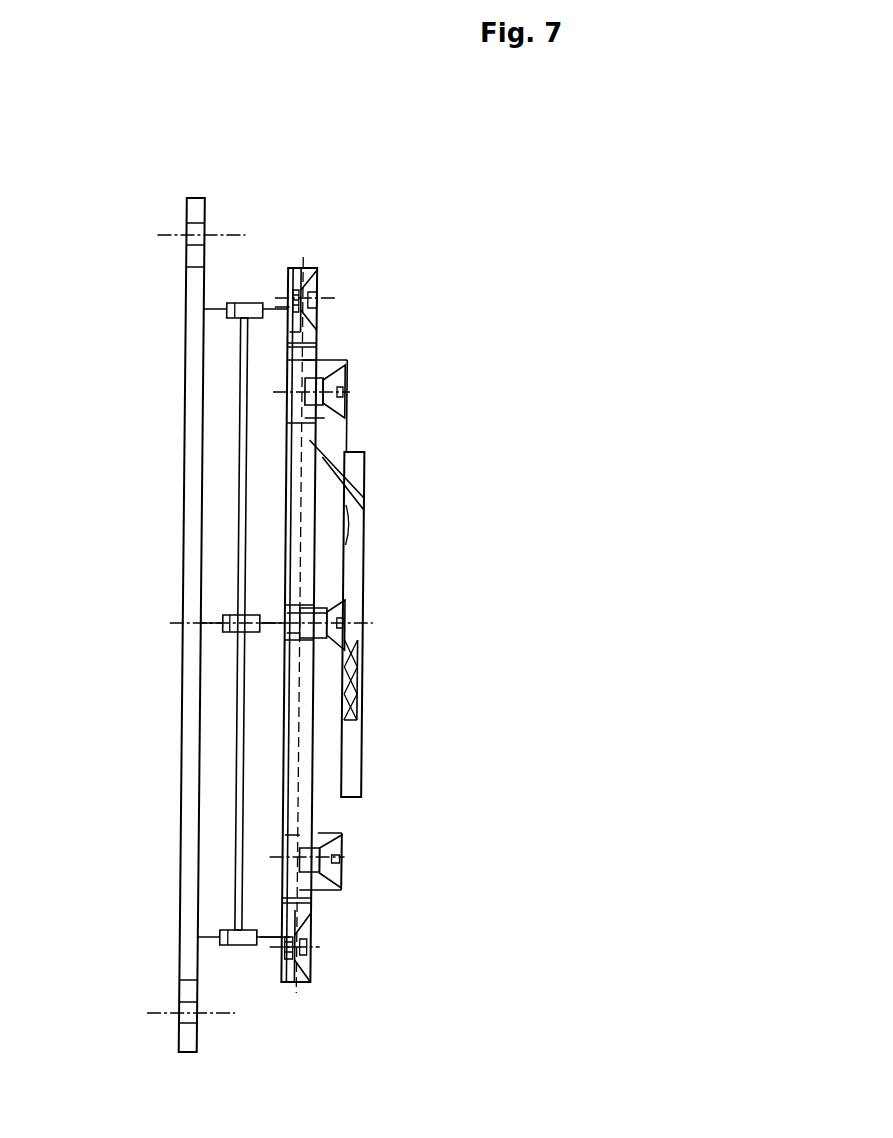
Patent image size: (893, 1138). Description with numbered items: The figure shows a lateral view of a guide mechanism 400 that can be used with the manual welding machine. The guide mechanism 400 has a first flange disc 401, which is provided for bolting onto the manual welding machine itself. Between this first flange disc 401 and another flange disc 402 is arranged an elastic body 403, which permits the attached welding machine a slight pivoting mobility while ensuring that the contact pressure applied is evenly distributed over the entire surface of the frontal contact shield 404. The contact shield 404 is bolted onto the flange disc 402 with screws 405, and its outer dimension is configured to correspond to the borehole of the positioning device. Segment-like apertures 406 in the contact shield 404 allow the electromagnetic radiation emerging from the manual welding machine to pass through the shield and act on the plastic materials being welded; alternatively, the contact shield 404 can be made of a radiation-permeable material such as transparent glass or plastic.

The guide mechanism 400 is at (438, 138).
The first flange disc 401 is at (192, 453).
The flange disc 402 is at (303, 917).
The elastic body 403 is at (243, 710).
The contact shield 404 is at (304, 812).
The screws 405 is at (334, 870).
The segment-like apertures 406 is at (351, 694).